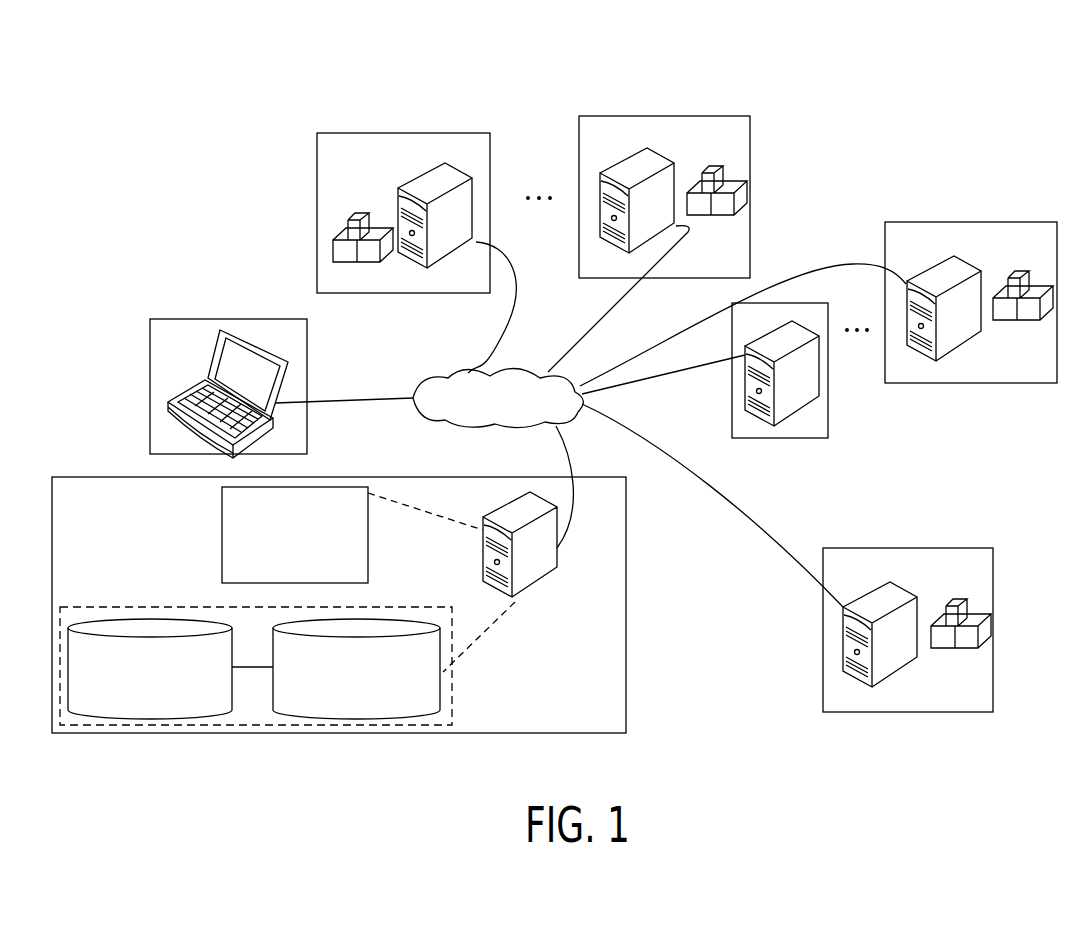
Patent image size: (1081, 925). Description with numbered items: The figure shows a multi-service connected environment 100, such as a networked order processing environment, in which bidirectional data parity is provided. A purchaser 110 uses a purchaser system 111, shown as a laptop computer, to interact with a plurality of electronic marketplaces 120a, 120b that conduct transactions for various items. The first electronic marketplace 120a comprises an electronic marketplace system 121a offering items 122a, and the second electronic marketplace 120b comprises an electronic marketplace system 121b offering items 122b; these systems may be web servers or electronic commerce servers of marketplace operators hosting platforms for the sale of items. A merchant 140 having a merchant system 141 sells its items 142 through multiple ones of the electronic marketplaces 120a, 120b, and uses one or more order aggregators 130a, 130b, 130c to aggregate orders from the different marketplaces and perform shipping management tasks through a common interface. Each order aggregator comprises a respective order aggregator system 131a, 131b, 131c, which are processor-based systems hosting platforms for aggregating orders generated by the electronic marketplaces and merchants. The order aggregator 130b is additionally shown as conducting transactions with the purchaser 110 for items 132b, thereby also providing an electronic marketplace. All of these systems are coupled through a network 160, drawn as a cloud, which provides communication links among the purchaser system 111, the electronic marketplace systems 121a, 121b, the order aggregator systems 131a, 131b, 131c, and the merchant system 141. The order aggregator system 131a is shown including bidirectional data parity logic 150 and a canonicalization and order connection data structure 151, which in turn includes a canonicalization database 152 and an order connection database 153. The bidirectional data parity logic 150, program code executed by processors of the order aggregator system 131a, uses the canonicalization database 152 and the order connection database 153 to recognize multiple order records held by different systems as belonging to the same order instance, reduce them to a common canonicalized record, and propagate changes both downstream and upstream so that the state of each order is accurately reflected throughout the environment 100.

The multi-service connected environment 100 is at (917, 100).
The purchaser 110 is at (263, 319).
The purchaser system 111 is at (232, 332).
The electronic marketplace 120a is at (317, 165).
The electronic marketplace system 121a is at (425, 170).
The items 122a is at (358, 197).
The electronic marketplace 120b is at (579, 148).
The electronic marketplace system 121b is at (628, 155).
The items 122b is at (718, 156).
The order aggregator 130a is at (626, 593).
The order aggregator system 131a is at (537, 583).
The order aggregator 130b is at (885, 247).
The order aggregator system 131b is at (933, 258).
The items 132b is at (1022, 261).
The order aggregator 130c is at (782, 438).
The order aggregator system 131c is at (812, 410).
The merchant 140 is at (823, 635).
The merchant system 141 is at (872, 587).
The items 142 is at (960, 588).
The bidirectional data parity logic 150 is at (222, 535).
The canonicalization and order connection data structure 151 is at (452, 720).
The canonicalization database 152 is at (147, 617).
The order connection database 153 is at (442, 692).
The network 160 is at (437, 380).